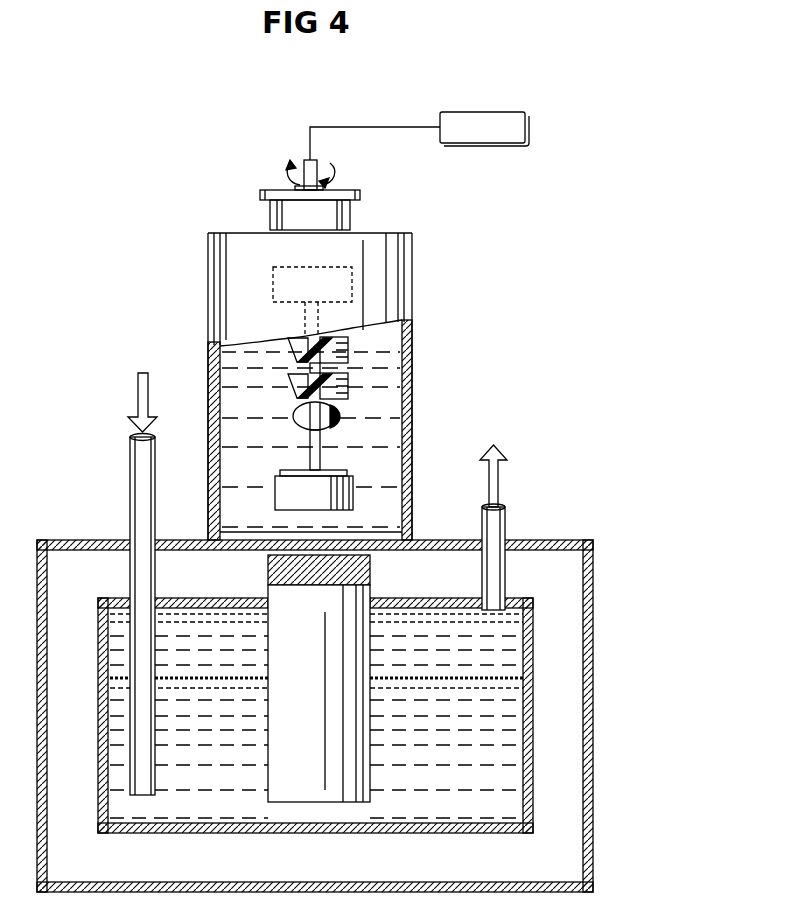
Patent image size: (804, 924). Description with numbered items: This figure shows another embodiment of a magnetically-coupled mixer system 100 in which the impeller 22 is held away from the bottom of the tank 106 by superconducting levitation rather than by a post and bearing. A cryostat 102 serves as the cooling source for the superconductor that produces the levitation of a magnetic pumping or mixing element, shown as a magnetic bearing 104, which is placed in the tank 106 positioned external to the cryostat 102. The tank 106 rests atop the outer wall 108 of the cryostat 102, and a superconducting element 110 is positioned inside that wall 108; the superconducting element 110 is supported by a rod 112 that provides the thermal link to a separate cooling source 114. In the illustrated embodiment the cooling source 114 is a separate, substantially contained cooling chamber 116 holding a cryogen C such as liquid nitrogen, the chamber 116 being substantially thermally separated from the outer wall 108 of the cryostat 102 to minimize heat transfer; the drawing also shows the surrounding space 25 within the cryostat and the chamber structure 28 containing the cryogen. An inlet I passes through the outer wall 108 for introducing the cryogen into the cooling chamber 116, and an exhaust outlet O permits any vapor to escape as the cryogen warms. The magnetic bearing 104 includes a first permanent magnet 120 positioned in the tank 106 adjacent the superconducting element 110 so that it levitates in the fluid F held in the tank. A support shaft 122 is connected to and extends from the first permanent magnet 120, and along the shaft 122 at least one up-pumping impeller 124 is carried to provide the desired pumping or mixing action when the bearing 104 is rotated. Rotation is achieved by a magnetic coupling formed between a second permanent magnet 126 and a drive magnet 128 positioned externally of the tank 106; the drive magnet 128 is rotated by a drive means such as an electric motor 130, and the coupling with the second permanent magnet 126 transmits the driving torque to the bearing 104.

The magnetically-coupled mixer system 100 is at (158, 206).
The electric motor 130 is at (522, 144).
The drive magnet 128 is at (350, 208).
The tank 106 is at (410, 300).
The second permanent magnet 126 is at (352, 287).
The impeller 22 is at (212, 352).
The magnetic bearing 104 is at (380, 387).
The up-pumping impeller 124 is at (350, 378).
The support shaft 122 is at (293, 417).
The first permanent magnet 120 is at (353, 492).
The fluid F is at (388, 470).
The outer wall 108 is at (592, 578).
The chamber 25 is at (73, 572).
The cryostat 102 is at (562, 518).
The tank 28 is at (496, 833).
The cooling source 114 is at (537, 706).
The cooling chamber 116 is at (375, 753).
The cryogen C is at (512, 782).
The superconducting element 110 is at (370, 572).
The rod 112 is at (326, 786).
The inlet I is at (130, 497).
The exhaust outlet O is at (507, 521).